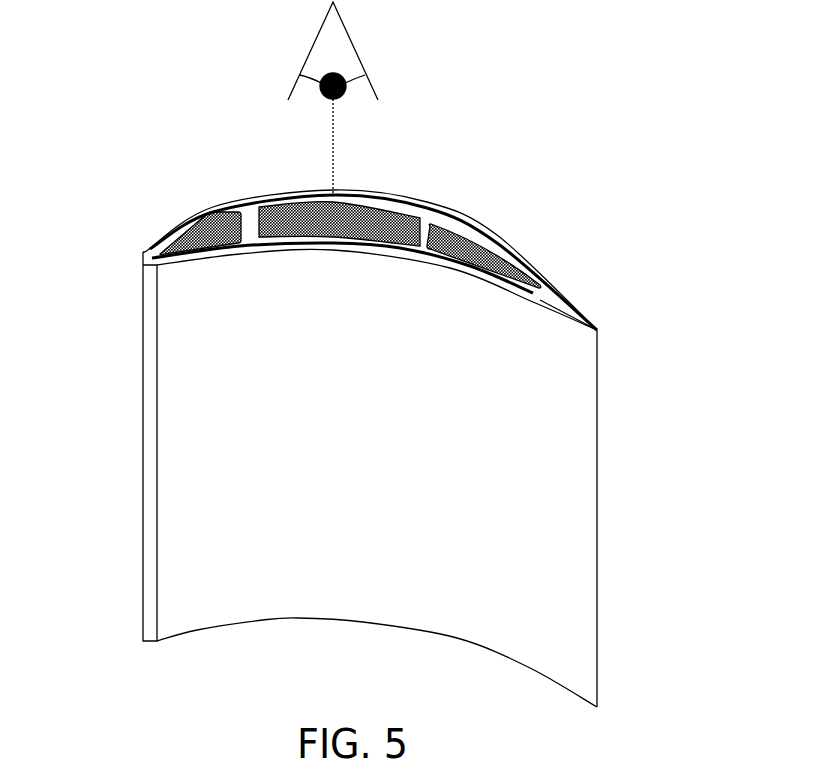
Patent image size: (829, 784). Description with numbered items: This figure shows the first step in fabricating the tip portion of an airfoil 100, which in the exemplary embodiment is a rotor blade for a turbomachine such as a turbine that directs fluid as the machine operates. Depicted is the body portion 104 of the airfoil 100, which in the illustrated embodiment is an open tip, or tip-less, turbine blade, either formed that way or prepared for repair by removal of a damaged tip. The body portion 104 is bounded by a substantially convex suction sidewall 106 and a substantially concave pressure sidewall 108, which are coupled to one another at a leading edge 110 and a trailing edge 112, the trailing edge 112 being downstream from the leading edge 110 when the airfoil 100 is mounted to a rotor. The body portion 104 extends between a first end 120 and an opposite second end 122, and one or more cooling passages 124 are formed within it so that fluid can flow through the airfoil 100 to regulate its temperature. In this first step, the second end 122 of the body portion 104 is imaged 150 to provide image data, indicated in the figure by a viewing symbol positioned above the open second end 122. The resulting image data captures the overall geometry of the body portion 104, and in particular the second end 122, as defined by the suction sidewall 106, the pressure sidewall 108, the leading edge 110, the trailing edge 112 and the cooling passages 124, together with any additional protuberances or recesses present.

The airfoil 100 is at (567, 127).
The body portion 104 is at (585, 378).
The suction sidewall 106 is at (495, 238).
The pressure sidewall 108 is at (188, 500).
The leading edge 110 is at (143, 346).
The trailing edge 112 is at (597, 447).
The first end 120 is at (457, 635).
The second end 122 is at (422, 208).
The cooling passages 124 is at (212, 222).
The imaging 150 is at (347, 32).